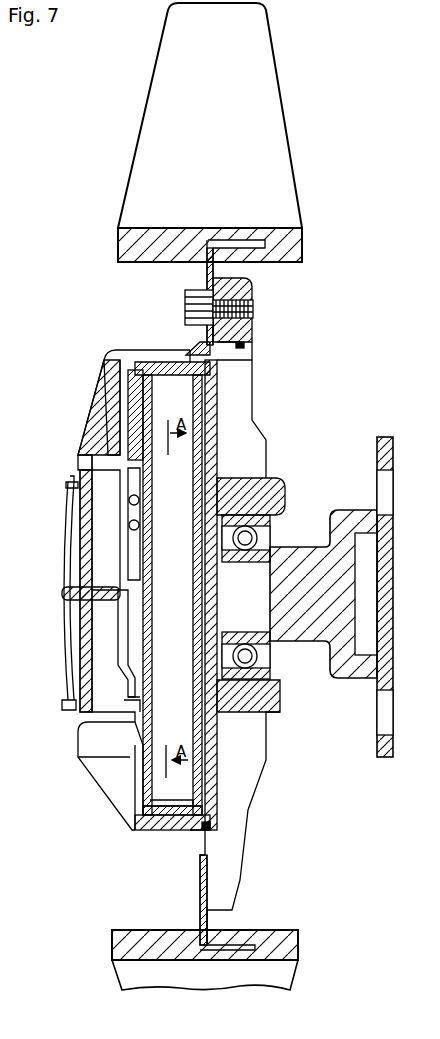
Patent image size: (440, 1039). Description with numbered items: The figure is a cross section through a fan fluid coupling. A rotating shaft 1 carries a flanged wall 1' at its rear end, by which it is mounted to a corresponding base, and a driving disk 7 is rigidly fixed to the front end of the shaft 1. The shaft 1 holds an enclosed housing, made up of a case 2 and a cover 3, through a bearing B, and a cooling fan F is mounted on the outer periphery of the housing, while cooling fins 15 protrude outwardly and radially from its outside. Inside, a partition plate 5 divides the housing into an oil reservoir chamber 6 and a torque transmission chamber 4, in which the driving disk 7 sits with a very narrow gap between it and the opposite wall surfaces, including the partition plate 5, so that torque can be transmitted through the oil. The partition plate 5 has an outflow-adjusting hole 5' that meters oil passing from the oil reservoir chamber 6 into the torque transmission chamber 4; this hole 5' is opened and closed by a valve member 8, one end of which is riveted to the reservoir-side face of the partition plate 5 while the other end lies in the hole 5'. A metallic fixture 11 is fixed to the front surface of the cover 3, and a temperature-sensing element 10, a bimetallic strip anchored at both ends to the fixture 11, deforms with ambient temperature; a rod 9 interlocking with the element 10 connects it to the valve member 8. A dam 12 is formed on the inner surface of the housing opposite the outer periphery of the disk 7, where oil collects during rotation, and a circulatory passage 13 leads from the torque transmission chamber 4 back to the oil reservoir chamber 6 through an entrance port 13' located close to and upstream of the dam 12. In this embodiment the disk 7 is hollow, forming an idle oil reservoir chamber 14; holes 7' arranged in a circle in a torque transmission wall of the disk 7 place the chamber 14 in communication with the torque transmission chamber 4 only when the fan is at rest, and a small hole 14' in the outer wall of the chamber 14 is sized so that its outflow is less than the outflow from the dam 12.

The cooling fan F is at (275, 90).
The rotating shaft 1 is at (323, 590).
The flanged wall 1' is at (399, 597).
The case 2 is at (218, 738).
The cover 3 is at (78, 752).
The torque transmission chamber 4 is at (208, 425).
The partition plate 5 is at (82, 524).
The outflow-adjusting hole 5' is at (82, 694).
The oil reservoir chamber 6 is at (100, 518).
The driving disk 7 is at (219, 588).
The holes 7' is at (166, 466).
The valve member 8 is at (118, 657).
The rod 9 is at (62, 593).
The temperature-sensing element 10 is at (63, 546).
The metallic fixture 11 is at (70, 482).
The dam 12 is at (245, 352).
The circulatory passage 13 is at (103, 531).
The entrance port 13' is at (132, 384).
The idle oil reservoir chamber 14 is at (221, 799).
The small hole 14' is at (195, 826).
The cooling fins 15 is at (248, 365).
The bearing B is at (256, 655).